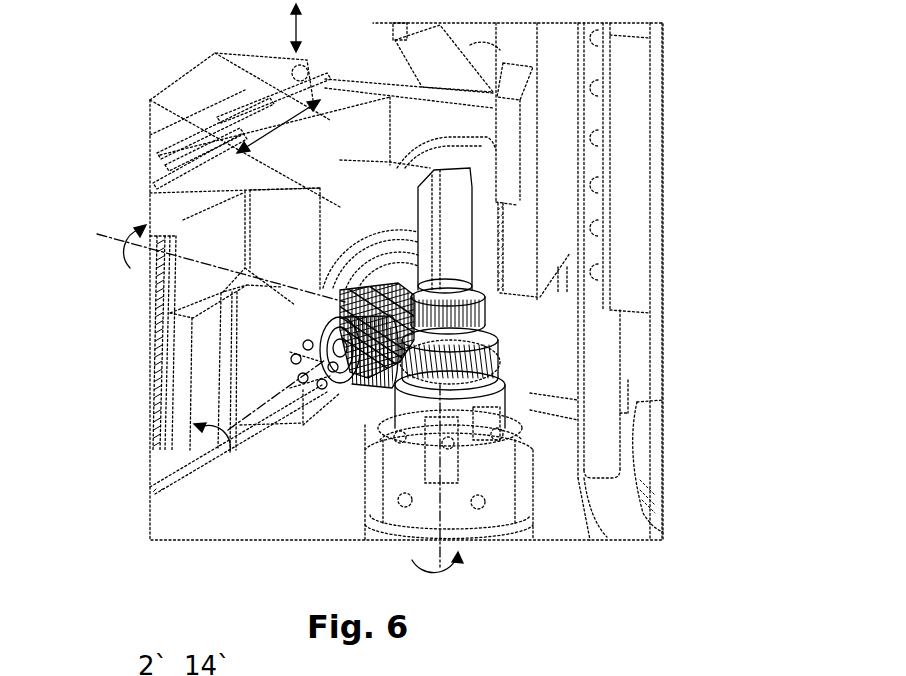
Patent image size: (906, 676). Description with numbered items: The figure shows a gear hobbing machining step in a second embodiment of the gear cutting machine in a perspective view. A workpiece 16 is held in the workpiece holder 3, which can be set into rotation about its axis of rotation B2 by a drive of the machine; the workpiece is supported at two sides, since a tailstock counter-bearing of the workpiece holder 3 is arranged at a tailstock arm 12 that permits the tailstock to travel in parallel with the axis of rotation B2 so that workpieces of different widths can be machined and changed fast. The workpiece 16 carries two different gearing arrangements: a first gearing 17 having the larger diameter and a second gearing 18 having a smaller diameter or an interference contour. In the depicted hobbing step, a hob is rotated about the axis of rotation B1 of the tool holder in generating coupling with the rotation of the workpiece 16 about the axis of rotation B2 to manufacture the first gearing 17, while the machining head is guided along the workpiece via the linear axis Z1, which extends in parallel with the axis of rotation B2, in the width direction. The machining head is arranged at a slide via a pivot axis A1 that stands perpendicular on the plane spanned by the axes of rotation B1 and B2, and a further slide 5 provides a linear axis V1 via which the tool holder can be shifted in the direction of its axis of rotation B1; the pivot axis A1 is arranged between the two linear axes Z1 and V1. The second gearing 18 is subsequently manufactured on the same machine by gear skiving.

The workpiece holder 3 is at (418, 380).
The slide 5 is at (281, 190).
The tailstock arm 12 is at (624, 281).
The second gearing 18 is at (589, 308).
The workpiece 16 is at (575, 381).
The first gearing 17 is at (590, 359).
The linear axis Z1 is at (316, 28).
The linear axis V1 is at (279, 126).
The pivot axis A1 is at (118, 259).
The axis of rotation B1 is at (220, 457).
The axis of rotation B2 is at (451, 576).